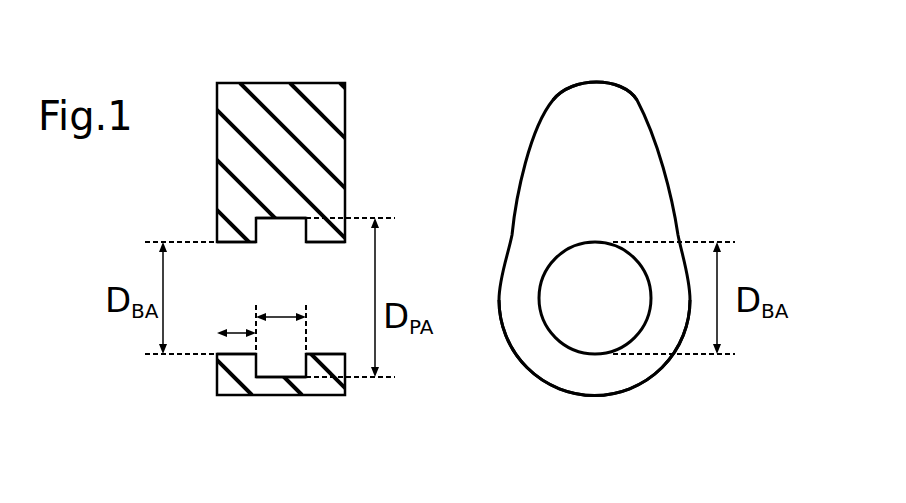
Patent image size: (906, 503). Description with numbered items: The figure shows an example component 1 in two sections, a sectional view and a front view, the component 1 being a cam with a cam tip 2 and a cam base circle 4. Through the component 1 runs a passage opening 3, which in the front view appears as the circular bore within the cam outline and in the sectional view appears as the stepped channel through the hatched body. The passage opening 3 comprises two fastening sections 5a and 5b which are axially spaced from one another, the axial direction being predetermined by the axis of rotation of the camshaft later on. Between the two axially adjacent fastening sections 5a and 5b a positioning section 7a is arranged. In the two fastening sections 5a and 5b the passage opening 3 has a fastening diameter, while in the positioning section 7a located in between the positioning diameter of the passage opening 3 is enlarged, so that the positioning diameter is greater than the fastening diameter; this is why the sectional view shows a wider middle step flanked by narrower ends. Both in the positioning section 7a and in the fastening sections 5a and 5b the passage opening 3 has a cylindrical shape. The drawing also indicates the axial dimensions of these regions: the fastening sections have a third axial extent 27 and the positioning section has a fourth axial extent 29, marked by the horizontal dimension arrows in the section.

The component 1 is at (333, 112).
The cam tip 2 is at (593, 82).
The passage opening 3 is at (622, 280).
The cam base circle 4 is at (643, 387).
The fastening section 5a is at (217, 242).
The fastening section 5b is at (329, 238).
The positioning section 7a is at (284, 218).
The third axial extent 27 is at (228, 332).
The fourth axial extent 29 is at (283, 314).